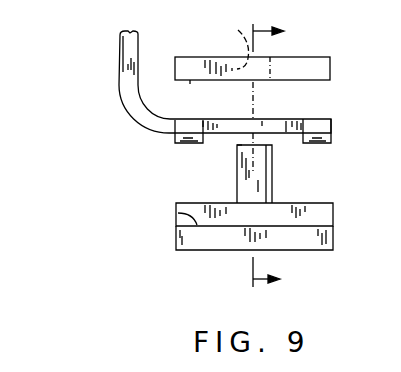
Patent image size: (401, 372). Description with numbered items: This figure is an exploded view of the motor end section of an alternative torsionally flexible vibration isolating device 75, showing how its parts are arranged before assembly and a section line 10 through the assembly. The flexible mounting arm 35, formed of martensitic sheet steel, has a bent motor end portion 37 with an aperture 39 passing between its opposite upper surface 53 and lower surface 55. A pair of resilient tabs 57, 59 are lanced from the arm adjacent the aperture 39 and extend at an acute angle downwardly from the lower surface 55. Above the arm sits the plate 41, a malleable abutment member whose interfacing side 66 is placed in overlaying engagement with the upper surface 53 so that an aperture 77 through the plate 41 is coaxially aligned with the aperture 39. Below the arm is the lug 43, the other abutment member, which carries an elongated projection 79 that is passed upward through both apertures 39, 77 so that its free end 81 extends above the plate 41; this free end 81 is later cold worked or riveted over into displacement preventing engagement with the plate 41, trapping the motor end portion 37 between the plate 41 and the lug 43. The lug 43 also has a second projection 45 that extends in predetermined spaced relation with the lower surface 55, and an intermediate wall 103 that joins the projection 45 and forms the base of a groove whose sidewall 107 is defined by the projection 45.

The torsionally flexible vibration isolating device 75 is at (113, 86).
The flexible mounting arm 35 is at (123, 50).
The plate 41 is at (190, 57).
The interfacing side 66 is at (190, 80).
The aperture 77 is at (236, 39).
The section line 10- 10 is at (282, 155).
The motor end portion 37 is at (335, 126).
The aperture 39 is at (266, 119).
The upper surface 53 is at (312, 118).
The tab 59 is at (335, 140).
The tab 57 is at (174, 139).
The lower surface 55 is at (288, 134).
The free end 81 is at (243, 143).
The projection 79 is at (267, 172).
The intermediate wall 103 is at (334, 211).
The sidewall 107 is at (178, 215).
The lug 43 is at (176, 240).
The projection 45 is at (334, 233).